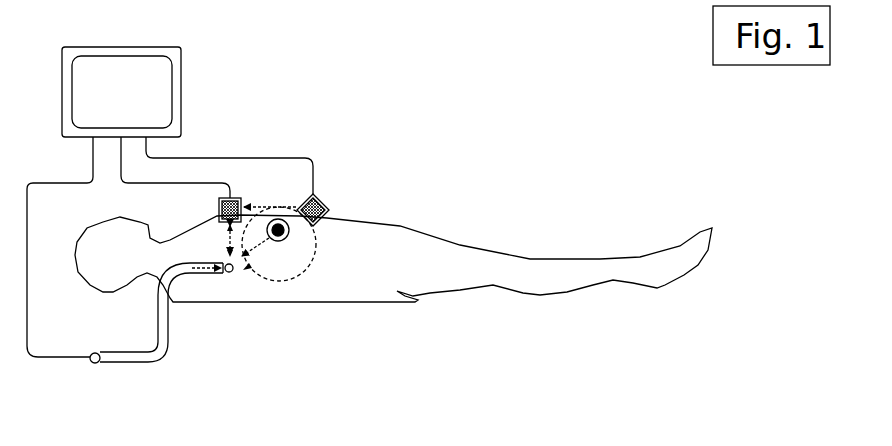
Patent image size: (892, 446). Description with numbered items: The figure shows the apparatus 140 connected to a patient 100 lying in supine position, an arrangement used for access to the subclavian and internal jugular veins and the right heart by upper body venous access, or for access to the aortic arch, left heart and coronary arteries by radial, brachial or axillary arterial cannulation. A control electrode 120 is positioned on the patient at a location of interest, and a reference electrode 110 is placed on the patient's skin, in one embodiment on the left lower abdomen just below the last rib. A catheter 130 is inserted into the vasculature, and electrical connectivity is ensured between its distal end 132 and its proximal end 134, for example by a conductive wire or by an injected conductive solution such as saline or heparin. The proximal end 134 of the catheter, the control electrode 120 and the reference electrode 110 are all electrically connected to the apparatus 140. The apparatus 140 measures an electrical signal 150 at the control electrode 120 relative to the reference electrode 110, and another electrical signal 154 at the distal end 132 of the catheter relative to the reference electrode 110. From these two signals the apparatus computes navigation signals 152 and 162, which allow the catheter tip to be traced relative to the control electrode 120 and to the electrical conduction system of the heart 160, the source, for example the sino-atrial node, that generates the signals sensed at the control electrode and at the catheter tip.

The patient 100 is at (507, 267).
The reference electrode 110 is at (331, 197).
The control electrode 120 is at (234, 195).
The catheter 130 is at (163, 352).
The distal end of the catheter 132 is at (232, 275).
The proximal end of the catheter 134 is at (91, 353).
The apparatus 140 is at (185, 82).
The electrical signal at the control electrode 150 is at (277, 197).
The navigation signal 152 is at (222, 248).
The electrical signal at the distal end of the catheter 154 is at (316, 243).
The electrical conduction system of the heart 160 is at (300, 242).
The navigation signal 162 is at (257, 252).